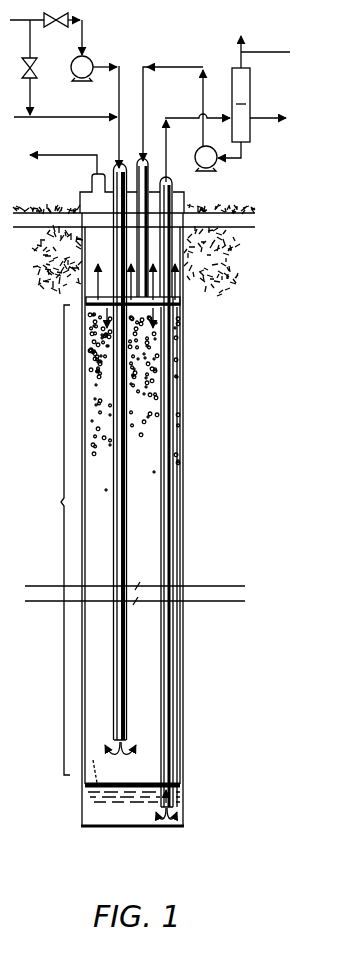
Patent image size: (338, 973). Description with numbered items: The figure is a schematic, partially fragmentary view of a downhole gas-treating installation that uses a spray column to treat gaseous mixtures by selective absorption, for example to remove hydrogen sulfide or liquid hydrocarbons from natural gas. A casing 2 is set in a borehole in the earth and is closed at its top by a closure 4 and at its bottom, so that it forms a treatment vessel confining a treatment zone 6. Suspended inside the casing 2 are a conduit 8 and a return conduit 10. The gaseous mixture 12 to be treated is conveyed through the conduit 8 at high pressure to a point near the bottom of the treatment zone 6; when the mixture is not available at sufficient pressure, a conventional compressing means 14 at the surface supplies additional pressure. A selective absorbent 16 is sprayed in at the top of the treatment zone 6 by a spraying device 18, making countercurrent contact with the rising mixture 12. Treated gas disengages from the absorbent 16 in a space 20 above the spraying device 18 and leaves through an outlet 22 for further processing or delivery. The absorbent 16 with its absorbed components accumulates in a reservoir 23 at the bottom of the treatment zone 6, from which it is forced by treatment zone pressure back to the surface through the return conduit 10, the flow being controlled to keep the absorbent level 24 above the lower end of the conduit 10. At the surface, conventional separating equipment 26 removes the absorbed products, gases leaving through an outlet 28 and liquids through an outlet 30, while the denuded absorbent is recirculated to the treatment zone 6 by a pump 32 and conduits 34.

The casing 2 is at (184, 474).
The closure 4 is at (80, 193).
The treatment zone 6 is at (56, 540).
The conduit 8 is at (120, 665).
The return conduit 10 is at (164, 636).
The gaseous mixture 12 is at (133, 746).
The compressing means 14 is at (92, 57).
The selective absorbent 16 is at (88, 348).
The spraying device 18 is at (162, 302).
The space 20 is at (85, 272).
The outlet 22 is at (92, 177).
The reservoir 23 is at (121, 822).
The absorbent level 24 is at (178, 777).
The separating equipment 26 is at (207, 109).
The outlet 28 is at (275, 52).
The outlet 30 is at (266, 118).
The pump 32 is at (217, 163).
The conduits 34 is at (170, 66).